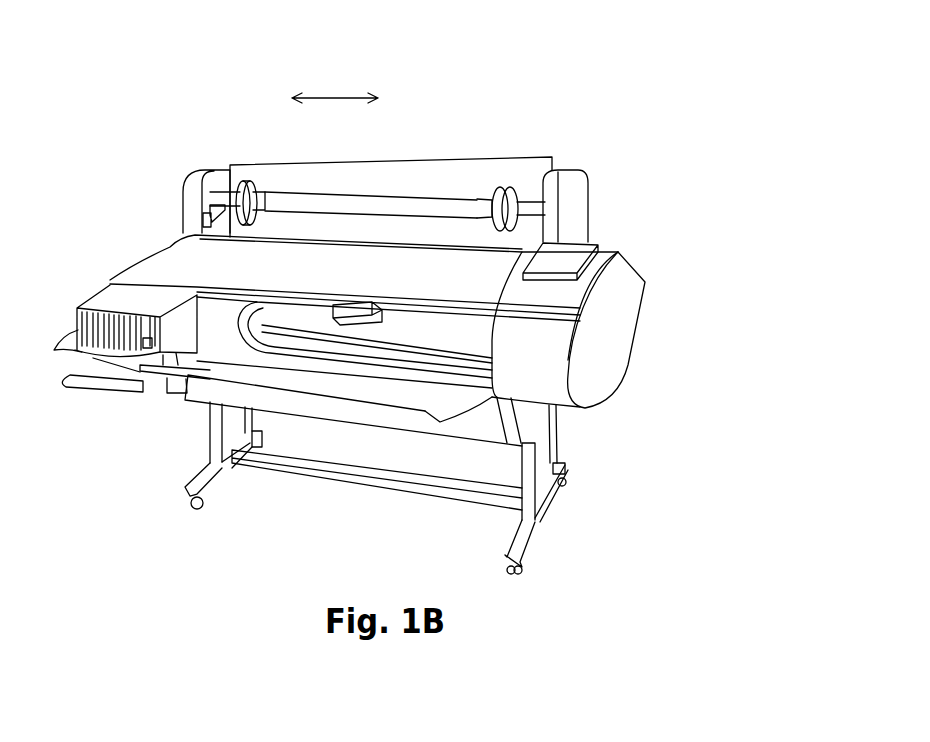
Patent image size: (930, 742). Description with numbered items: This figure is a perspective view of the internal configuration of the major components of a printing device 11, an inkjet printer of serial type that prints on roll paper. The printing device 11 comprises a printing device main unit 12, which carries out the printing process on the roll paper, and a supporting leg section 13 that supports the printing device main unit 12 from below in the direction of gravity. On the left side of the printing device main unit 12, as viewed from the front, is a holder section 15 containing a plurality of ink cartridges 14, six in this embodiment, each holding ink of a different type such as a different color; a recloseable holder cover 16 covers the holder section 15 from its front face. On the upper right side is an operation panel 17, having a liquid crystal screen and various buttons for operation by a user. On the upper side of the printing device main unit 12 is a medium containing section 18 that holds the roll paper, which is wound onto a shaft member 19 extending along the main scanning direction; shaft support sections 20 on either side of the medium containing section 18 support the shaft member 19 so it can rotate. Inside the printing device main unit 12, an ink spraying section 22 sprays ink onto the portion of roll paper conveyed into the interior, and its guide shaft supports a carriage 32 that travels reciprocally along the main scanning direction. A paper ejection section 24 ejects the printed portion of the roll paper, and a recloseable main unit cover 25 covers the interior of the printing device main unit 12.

The printing device 11 is at (522, 62).
The printing device main unit 12 is at (670, 226).
The supporting leg section 13 is at (568, 516).
The ink cartridges 14 is at (100, 333).
The holder section 15 is at (100, 305).
The holder cover 16 is at (83, 378).
The operation panel 17 is at (580, 237).
The medium containing section 18 is at (577, 157).
The shaft member 19 is at (350, 203).
The shaft support sections 20 is at (205, 208).
The ink spraying section 22 is at (450, 407).
The paper ejection section 24 is at (207, 396).
The main unit cover 25 is at (172, 388).
The carriage 32 is at (357, 302).